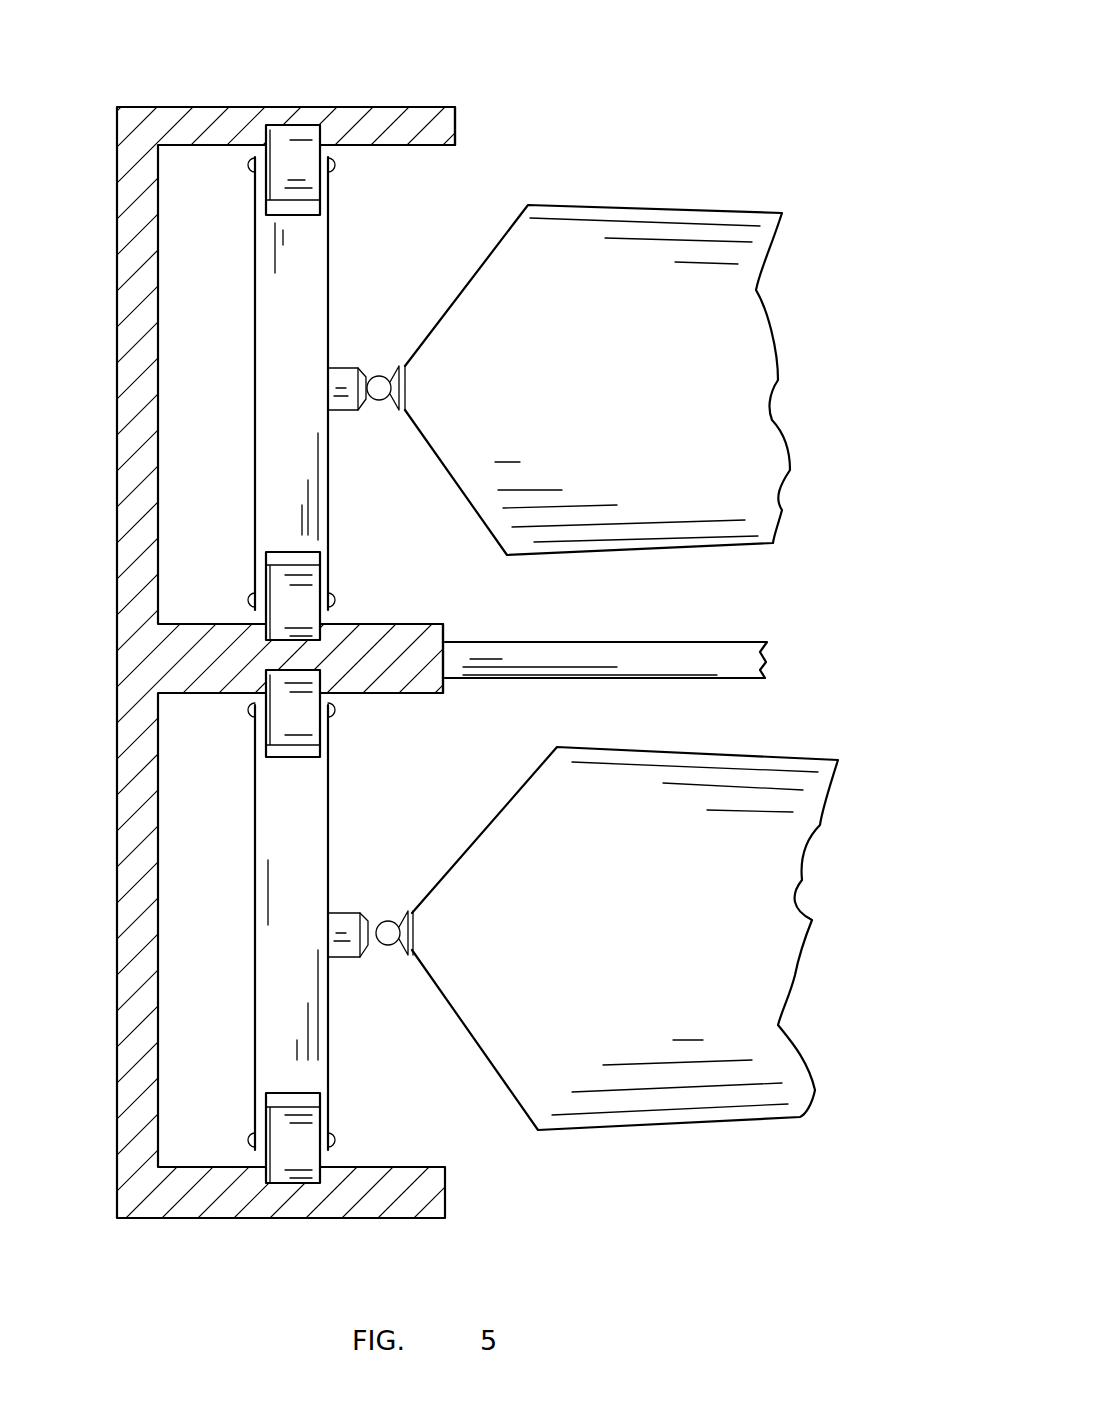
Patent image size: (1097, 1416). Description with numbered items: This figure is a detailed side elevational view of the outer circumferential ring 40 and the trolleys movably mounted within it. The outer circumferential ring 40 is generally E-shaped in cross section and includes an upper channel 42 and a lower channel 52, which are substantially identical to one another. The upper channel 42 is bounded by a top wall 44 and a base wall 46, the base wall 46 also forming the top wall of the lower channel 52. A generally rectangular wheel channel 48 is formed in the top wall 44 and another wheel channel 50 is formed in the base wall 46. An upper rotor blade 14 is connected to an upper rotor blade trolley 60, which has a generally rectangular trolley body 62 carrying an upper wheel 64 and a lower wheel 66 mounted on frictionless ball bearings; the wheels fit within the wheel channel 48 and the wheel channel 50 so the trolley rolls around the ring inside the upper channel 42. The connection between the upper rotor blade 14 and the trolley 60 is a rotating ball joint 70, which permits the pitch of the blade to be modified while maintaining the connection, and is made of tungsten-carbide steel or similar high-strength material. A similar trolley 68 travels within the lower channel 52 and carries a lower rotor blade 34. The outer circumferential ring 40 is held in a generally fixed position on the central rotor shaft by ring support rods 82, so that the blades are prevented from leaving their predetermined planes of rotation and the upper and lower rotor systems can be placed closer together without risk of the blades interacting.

The upper rotor blade 14 is at (593, 282).
The lower rotor blade 34 is at (637, 1020).
The outer circumferential ring 40 is at (168, 122).
The upper channel 42 is at (211, 212).
The top wall 44 is at (423, 120).
The base wall 46 is at (193, 645).
The wheel channel 48 is at (292, 122).
The wheel channel 50 is at (270, 648).
The lower channel 52 is at (200, 964).
The upper rotor blade trolley 60 is at (182, 383).
The trolley body 62 is at (280, 325).
The upper wheel 64 is at (355, 130).
The lower wheel 66 is at (283, 592).
The trolley 68 is at (265, 873).
The rotating ball joint 70 is at (382, 376).
The ring support rod 82 is at (630, 655).